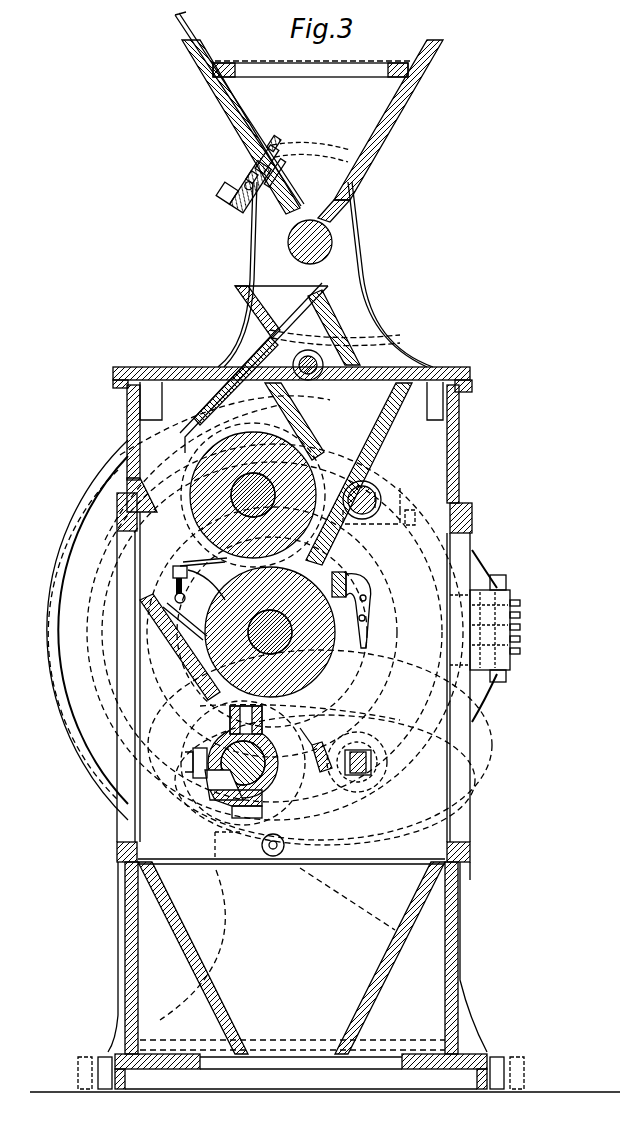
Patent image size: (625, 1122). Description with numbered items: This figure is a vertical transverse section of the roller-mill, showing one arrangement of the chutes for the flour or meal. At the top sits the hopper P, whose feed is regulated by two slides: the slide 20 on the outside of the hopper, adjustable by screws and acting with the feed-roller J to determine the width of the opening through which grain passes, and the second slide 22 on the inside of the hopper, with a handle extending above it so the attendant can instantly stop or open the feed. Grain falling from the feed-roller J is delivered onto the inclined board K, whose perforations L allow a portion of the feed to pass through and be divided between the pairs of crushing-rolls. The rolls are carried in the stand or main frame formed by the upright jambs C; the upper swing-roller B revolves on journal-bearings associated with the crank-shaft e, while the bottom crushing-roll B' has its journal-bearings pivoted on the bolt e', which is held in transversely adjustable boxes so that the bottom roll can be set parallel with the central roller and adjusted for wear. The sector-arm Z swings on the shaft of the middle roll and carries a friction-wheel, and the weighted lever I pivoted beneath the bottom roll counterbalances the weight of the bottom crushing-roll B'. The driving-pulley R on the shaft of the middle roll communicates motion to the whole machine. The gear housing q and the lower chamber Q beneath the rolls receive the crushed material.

The hopper P is at (312, 131).
The second slide 22 is at (204, 44).
The slide 20 is at (292, 226).
The feed-roller J is at (332, 242).
The inclined board K is at (308, 310).
The perforations L is at (312, 346).
The upright jambs C is at (301, 737).
The upper crushing-roll B is at (253, 495).
The crank-shaft e is at (379, 503).
The bottom crushing-roll B' is at (243, 763).
The bolt e' is at (343, 760).
The sector-arm Z is at (258, 846).
The weighted lever I is at (320, 748).
The driving-pulley R is at (87, 630).
The gear box q is at (491, 628).
The lower chamber Q is at (292, 959).